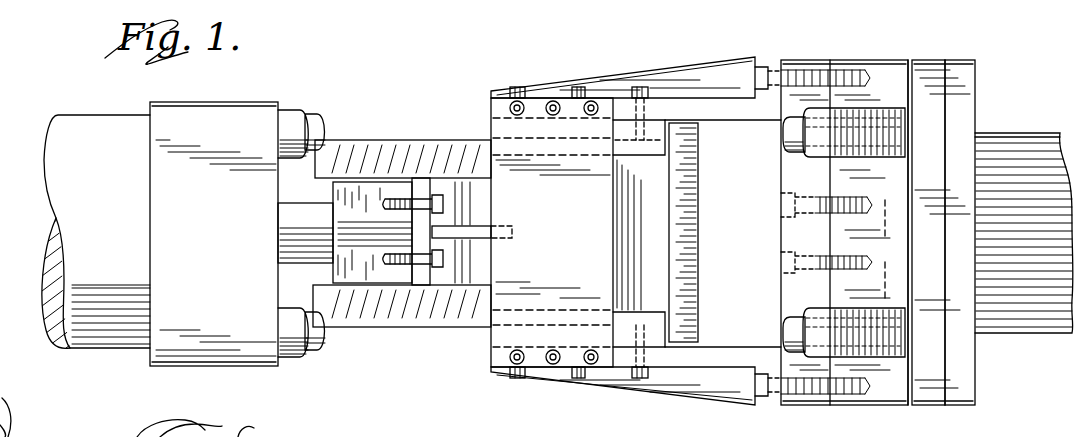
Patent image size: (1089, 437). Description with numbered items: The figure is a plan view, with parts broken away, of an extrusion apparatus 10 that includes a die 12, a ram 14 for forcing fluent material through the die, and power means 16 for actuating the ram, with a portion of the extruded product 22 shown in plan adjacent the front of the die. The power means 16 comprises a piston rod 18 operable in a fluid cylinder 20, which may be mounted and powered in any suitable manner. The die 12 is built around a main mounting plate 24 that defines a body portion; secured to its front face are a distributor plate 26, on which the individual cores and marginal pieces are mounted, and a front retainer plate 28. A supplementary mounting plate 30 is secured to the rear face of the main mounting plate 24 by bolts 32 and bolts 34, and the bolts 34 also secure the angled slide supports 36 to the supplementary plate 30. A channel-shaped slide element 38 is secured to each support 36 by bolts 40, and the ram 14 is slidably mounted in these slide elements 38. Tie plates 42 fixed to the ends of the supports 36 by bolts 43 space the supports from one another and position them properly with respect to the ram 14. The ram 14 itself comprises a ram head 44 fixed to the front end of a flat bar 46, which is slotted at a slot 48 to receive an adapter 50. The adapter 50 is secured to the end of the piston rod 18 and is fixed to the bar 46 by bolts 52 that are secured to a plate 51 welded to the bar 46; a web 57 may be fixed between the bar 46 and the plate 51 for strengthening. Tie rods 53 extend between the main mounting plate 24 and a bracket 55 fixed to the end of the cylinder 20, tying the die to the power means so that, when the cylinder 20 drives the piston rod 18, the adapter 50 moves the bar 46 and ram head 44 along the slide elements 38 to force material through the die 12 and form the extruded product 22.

The apparatus 10 is at (434, 88).
The die 12 is at (906, 233).
The ram 14 is at (460, 310).
The power means 16 is at (125, 330).
The piston rod 18 is at (290, 226).
The fluid cylinder 20 is at (95, 137).
The extruded product 22 is at (1040, 130).
The main mounting plate 24 is at (876, 405).
The distributor plate 26 is at (932, 405).
The front retainer plate 28 is at (977, 402).
The supplementary mounting plate 30 is at (781, 290).
The bolts 32 is at (781, 205).
The bolts 34 is at (752, 72).
The angled slide supports 36 is at (686, 388).
The channel-shaped slide element 38 is at (652, 152).
The bolts 40 is at (519, 87).
The tie plates 42 is at (574, 255).
The bolts 43 is at (511, 105).
The ram head 44 is at (690, 272).
The flat bar 46 is at (478, 158).
The slot 48 is at (352, 185).
The adapter 50 is at (372, 265).
The plate 51 is at (419, 178).
The bolts 52 is at (440, 208).
The tie rods 53 is at (295, 108).
The bracket 55 is at (232, 115).
The web 57 is at (491, 230).